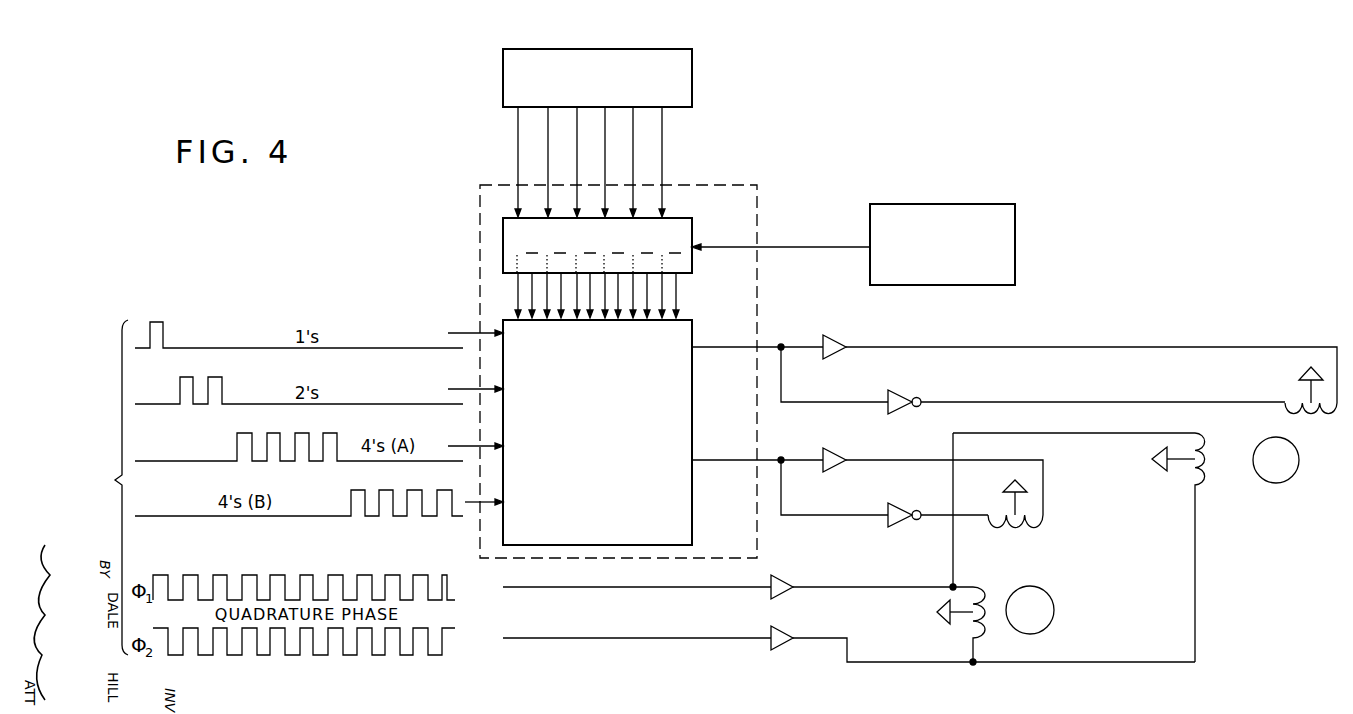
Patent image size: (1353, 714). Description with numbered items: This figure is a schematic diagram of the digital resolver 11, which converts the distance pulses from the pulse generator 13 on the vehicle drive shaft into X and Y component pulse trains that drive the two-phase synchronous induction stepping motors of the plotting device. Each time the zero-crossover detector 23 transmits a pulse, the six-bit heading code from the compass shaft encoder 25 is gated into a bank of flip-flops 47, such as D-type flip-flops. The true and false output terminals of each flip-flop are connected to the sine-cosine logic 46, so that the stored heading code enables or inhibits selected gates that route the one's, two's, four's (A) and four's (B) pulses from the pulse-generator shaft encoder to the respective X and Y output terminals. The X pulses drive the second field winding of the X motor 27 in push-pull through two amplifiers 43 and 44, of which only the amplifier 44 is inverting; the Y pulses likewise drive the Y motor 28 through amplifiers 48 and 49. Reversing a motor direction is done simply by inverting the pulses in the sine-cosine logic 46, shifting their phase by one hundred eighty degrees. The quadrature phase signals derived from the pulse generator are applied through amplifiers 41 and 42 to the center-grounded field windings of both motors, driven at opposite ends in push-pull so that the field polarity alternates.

The digital resolver 11 is at (478, 239).
The pulse generator 13 is at (49, 515).
The zero-crossover detector 23 is at (1017, 222).
The compass shaft encoder 25 is at (692, 60).
The X motor 27 is at (1042, 586).
The Y motor 28 is at (1297, 475).
The amplifier 41 is at (783, 583).
The amplifier 42 is at (783, 634).
The amplifier 43 is at (834, 456).
The inverting amplifier 44 is at (897, 508).
The sine-cosine logic 46 is at (581, 389).
The bank of flip-flops 47 is at (692, 230).
The amplifier 48 is at (835, 343).
The amplifier 49 is at (897, 395).